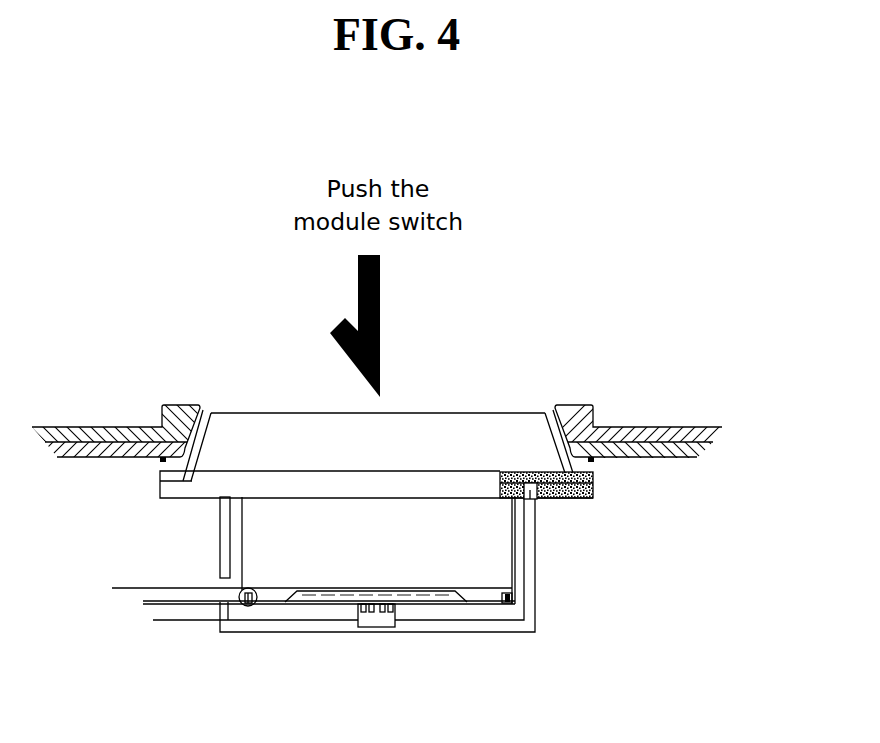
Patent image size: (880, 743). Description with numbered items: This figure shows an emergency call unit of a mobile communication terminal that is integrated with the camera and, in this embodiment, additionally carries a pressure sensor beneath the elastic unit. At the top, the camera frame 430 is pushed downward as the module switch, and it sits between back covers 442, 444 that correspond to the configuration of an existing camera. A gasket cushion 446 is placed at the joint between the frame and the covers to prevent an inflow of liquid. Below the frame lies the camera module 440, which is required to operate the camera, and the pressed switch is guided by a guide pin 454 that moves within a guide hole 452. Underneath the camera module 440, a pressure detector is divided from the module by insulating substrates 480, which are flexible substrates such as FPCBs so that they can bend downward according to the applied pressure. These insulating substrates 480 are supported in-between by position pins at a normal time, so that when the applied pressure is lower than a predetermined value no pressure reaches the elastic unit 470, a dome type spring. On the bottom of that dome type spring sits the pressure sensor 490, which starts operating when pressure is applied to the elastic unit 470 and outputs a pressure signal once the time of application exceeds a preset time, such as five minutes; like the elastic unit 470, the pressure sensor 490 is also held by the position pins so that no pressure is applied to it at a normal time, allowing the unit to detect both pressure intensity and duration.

The camera frame 430 is at (552, 417).
The camera module 440 is at (253, 543).
The back cover 442 is at (663, 427).
The back cover 444 is at (673, 458).
The gasket cushion 446 is at (592, 462).
The guide hole 452 is at (540, 498).
The guide pin 454 is at (529, 500).
The elastic unit 470 is at (452, 598).
The insulating substrates 480 is at (158, 621).
The pressure sensor 490 is at (377, 620).